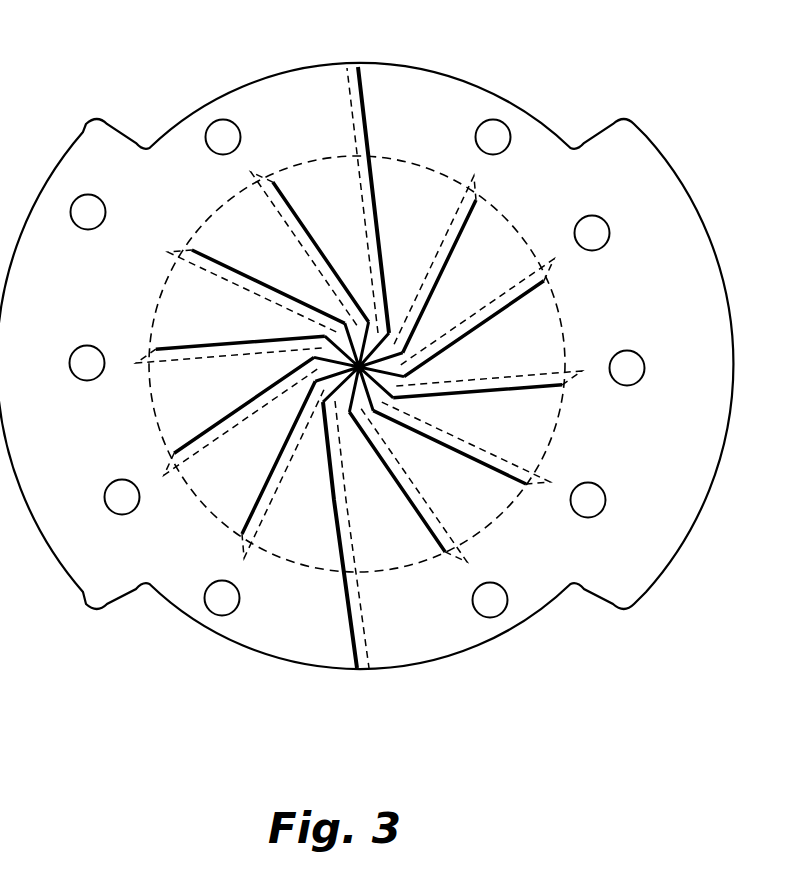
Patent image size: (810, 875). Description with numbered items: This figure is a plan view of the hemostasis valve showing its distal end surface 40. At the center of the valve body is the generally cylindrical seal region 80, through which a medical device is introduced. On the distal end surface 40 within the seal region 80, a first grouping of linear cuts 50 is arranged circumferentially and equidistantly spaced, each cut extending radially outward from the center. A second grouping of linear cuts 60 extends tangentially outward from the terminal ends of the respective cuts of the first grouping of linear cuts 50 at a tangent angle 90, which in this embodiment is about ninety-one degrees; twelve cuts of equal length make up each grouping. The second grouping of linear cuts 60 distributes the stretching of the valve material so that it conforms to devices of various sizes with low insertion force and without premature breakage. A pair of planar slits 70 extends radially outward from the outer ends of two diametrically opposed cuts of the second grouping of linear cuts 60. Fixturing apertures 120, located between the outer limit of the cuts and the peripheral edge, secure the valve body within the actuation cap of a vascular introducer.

The distal end surface 40 is at (157, 174).
The first grouping of linear cuts 50 is at (342, 421).
The second grouping of linear cuts 60 is at (428, 160).
The planar slits 70 is at (362, 88).
The seal region 80 is at (357, 318).
The tangent angle 90 is at (313, 347).
The fixturing apertures 120 is at (588, 236).